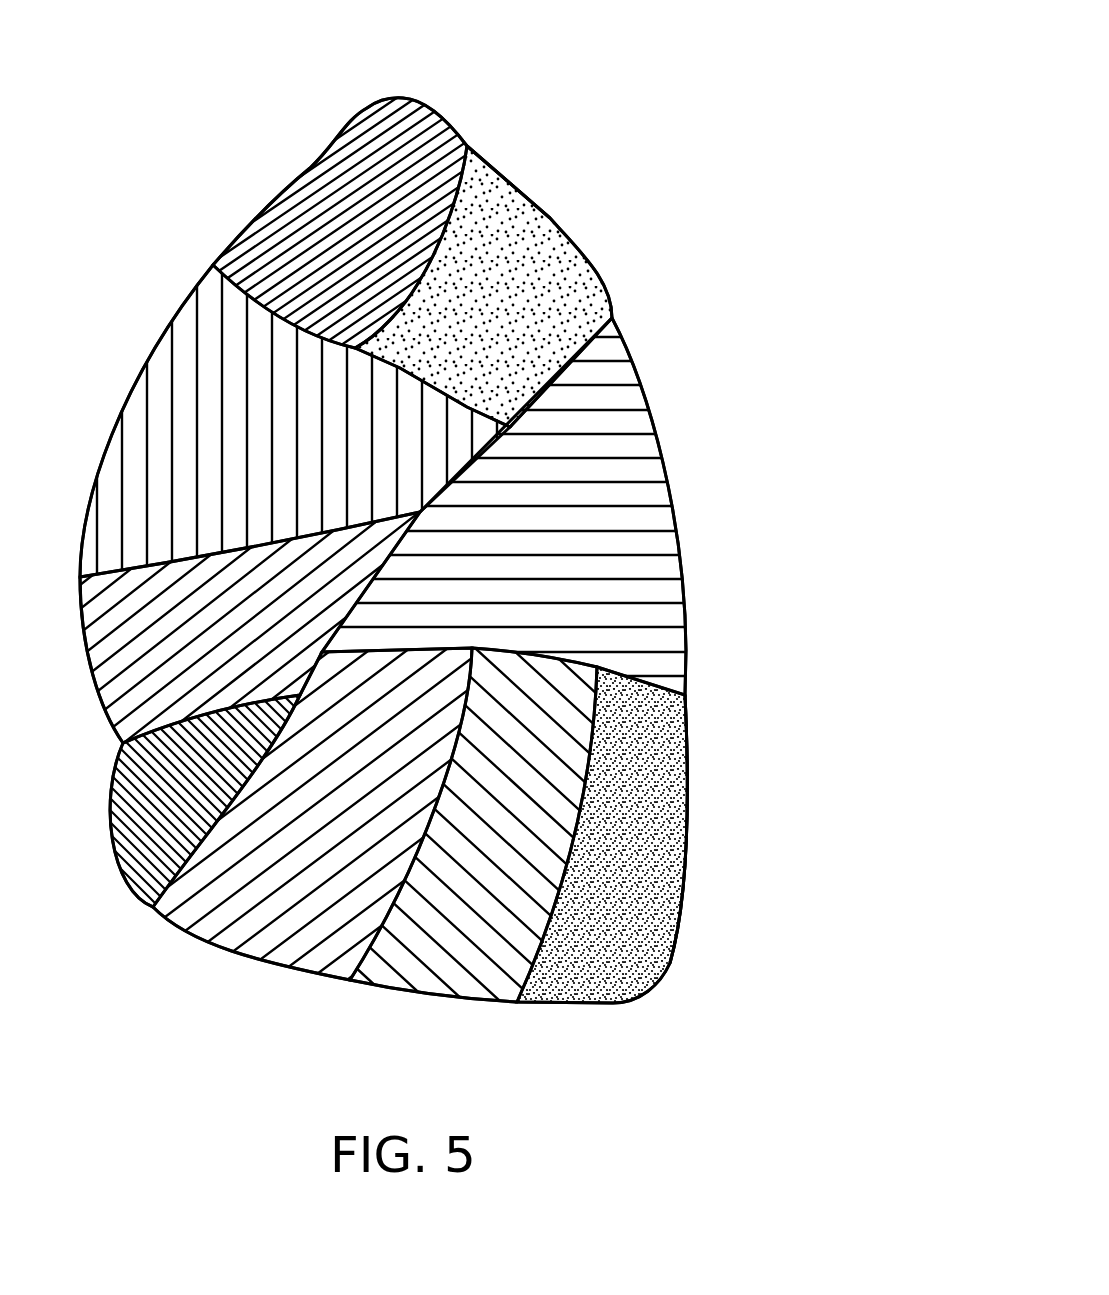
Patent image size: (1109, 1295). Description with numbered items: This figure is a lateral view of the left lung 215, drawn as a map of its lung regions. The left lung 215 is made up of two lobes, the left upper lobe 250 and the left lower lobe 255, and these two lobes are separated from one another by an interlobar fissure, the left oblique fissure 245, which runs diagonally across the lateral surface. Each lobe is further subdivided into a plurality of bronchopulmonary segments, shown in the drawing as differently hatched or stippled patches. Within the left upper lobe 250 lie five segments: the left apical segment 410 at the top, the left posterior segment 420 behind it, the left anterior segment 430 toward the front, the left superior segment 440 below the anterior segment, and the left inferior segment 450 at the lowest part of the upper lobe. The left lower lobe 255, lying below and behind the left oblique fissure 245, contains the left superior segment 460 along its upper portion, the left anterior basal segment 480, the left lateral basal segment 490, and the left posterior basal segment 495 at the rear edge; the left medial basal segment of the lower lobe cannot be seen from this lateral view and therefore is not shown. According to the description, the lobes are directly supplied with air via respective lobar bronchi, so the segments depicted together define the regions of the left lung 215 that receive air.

The left lung 215 is at (590, 85).
The left oblique fissure 245 is at (605, 361).
The left upper lobe 250 is at (550, 218).
The left lower lobe 255 is at (680, 910).
The left apical segment 410 is at (341, 223).
The left posterior segment 420 is at (483, 286).
The left anterior segment 430 is at (295, 421).
The left superior segment 440 is at (252, 627).
The left inferior segment 450 is at (200, 801).
The left superior segment 460 is at (505, 506).
The left anterior basal segment 480 is at (312, 814).
The left lateral basal segment 490 is at (470, 825).
The left posterior basal segment 495 is at (602, 835).